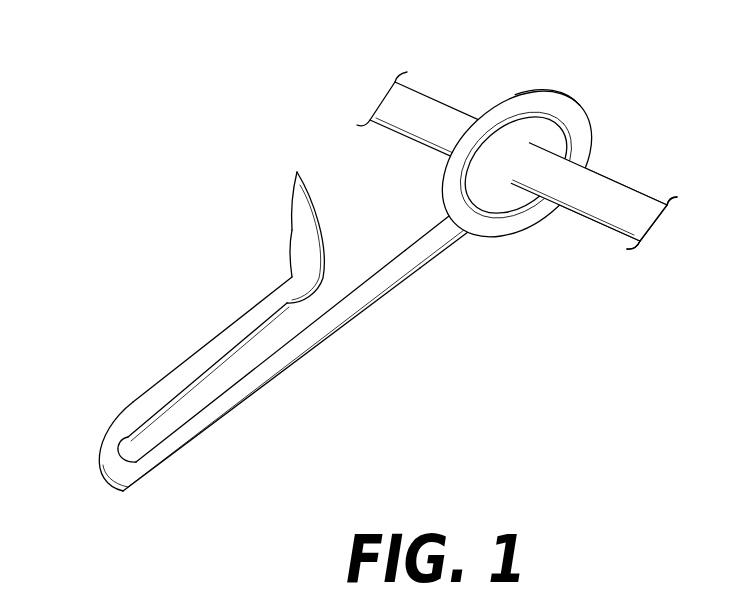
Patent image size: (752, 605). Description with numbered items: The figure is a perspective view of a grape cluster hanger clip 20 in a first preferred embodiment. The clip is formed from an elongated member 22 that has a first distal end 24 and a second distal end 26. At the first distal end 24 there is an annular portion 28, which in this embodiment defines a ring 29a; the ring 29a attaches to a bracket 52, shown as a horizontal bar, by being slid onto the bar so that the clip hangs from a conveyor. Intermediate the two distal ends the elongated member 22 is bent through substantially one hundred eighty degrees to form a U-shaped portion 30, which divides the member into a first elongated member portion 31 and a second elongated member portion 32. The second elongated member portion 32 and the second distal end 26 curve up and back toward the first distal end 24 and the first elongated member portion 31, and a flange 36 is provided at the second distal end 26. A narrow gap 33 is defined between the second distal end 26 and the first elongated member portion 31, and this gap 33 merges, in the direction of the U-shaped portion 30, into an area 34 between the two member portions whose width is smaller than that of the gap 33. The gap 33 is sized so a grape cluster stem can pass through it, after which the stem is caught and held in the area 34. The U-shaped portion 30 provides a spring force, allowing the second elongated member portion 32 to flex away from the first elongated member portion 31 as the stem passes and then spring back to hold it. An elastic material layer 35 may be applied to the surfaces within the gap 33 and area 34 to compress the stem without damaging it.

The grape cluster hanger clip 20 is at (367, 287).
The elongated member 22 is at (299, 353).
The first distal end 24 is at (466, 233).
The second distal end 26 is at (286, 237).
The annular portion 28 is at (559, 148).
The ring 29a is at (584, 161).
The U-shaped portion 30 is at (108, 480).
The first elongated member portion 31 is at (246, 403).
The second elongated member portion 32 is at (174, 378).
The gap 33 is at (319, 300).
The area 34 is at (152, 430).
The elastic material layer 35 is at (105, 450).
The flange 36 is at (296, 194).
The bracket 52 is at (530, 175).